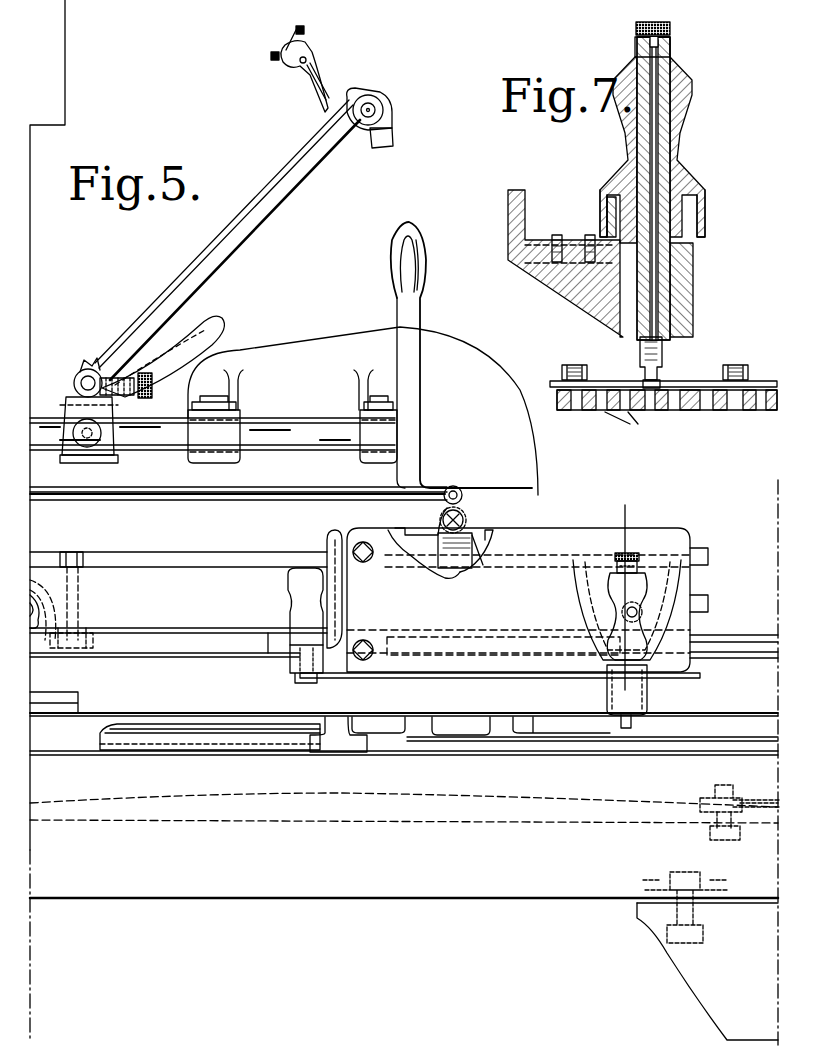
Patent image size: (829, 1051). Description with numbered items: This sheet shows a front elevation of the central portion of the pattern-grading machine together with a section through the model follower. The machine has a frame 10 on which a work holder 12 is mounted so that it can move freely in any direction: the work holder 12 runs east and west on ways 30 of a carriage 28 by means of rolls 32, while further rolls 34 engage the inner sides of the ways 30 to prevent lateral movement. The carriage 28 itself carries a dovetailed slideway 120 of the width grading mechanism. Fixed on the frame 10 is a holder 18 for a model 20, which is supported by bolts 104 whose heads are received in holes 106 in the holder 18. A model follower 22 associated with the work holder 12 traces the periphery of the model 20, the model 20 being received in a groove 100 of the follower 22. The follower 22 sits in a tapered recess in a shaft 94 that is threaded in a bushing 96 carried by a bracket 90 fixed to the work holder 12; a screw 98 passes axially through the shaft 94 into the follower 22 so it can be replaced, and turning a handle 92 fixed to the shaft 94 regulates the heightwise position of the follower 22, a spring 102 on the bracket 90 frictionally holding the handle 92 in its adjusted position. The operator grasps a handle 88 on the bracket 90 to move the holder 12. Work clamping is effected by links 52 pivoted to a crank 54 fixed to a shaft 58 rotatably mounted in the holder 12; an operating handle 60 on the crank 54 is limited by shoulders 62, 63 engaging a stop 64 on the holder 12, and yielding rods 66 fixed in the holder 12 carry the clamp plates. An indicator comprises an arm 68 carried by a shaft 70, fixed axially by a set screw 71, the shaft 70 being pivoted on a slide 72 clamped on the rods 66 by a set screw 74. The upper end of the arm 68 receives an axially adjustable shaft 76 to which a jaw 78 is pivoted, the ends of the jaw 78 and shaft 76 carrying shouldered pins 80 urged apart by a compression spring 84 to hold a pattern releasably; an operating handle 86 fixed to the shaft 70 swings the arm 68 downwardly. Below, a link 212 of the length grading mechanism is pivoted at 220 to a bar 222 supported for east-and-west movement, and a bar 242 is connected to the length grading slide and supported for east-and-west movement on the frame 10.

In FIG. 5, the frame 10 is at (226, 893).
In FIG. 5, the work holder 12 is at (310, 335).
In FIG. 5, the holder 18 is at (472, 742).
In FIG. 7, the holder 18 is at (772, 413).
In FIG. 7, the model 20 is at (768, 375).
In FIG. 5, the model follower 22 is at (635, 722).
In FIG. 7, the model follower 22 is at (662, 372).
In FIG. 5, the carriage 28 is at (92, 710).
In FIG. 5, the ways 30 is at (170, 645).
In FIG. 5, the rolls 32 is at (42, 568).
In FIG. 5, the rolls 34 is at (93, 640).
In FIG. 5, the links 52 is at (130, 490).
In FIG. 5, the crank 54 is at (458, 487).
In FIG. 5, the shaft 58 is at (462, 518).
In FIG. 5, the operating handle 60 is at (415, 222).
In FIG. 5, the shoulder 62 is at (422, 528).
In FIG. 5, the shoulder 63 is at (478, 545).
In FIG. 5, the stop 64 is at (427, 538).
In FIG. 5, the rods 66 is at (282, 428).
In FIG. 5, the arm 68 is at (292, 198).
In FIG. 5, the shaft 70 is at (82, 378).
In FIG. 5, the set screw 71 is at (152, 385).
In FIG. 5, the slide 72 is at (66, 400).
In FIG. 5, the set screw 74 is at (78, 440).
In FIG. 5, the shaft 76 is at (342, 93).
In FIG. 5, the jaw 78 is at (295, 78).
In FIG. 5, the shouldered pins 80 is at (294, 30).
In FIG. 5, the compression spring 84 is at (320, 80).
In FIG. 5, the operating handle 86 is at (212, 320).
In FIG. 5, the handle 88 is at (292, 586).
In FIG. 5, the bracket 90 is at (663, 530).
In FIG. 7, the bracket 90 is at (508, 204).
In FIG. 5, the handle 92 is at (645, 582).
In FIG. 7, the handle 92 is at (694, 85).
In FIG. 7, the shaft 94 is at (665, 125).
In FIG. 7, the bushing 96 is at (700, 213).
In FIG. 5, the screw 98 is at (632, 556).
In FIG. 7, the screw 98 is at (670, 27).
In FIG. 7, the groove 100 is at (643, 382).
In FIG. 7, the spring 102 is at (607, 212).
In FIG. 7, the bolts 104 is at (572, 365).
In FIG. 7, the holes 106 is at (660, 412).
In FIG. 5, the dovetailed slideway 120 is at (60, 716).
In FIG. 5, the link 212 is at (762, 795).
In FIG. 5, the pivot 220 is at (715, 785).
In FIG. 5, the bar 222 is at (410, 822).
In FIG. 5, the bar 242 is at (214, 742).